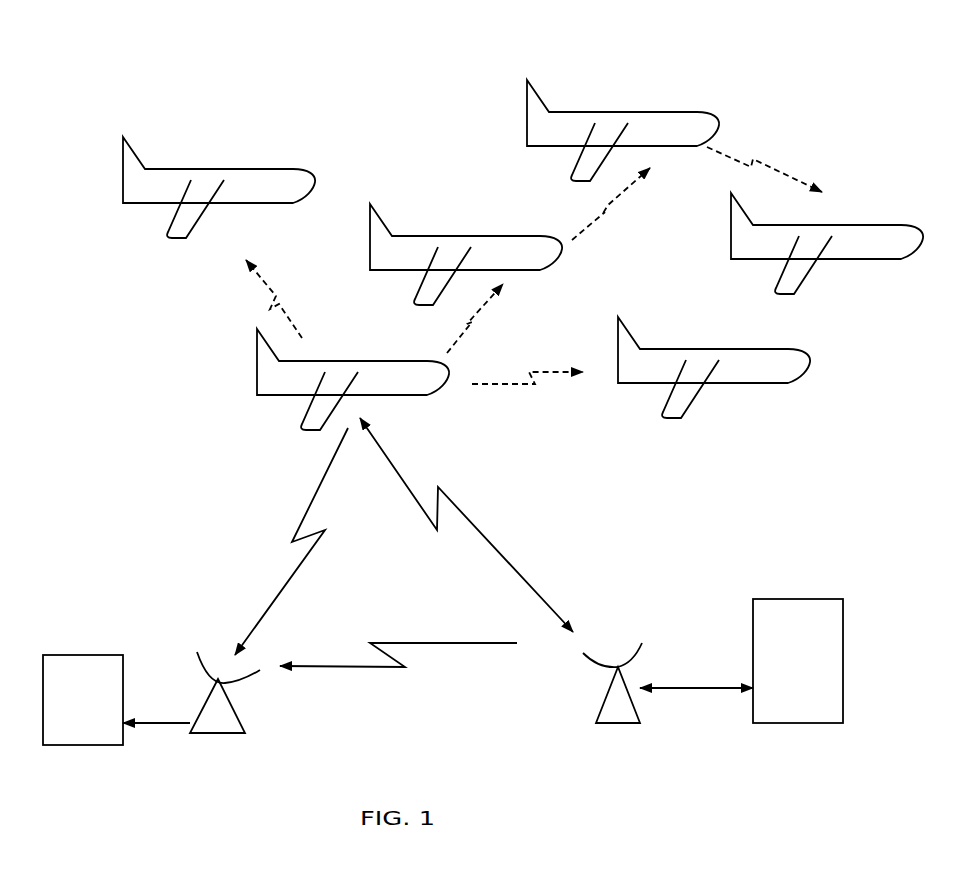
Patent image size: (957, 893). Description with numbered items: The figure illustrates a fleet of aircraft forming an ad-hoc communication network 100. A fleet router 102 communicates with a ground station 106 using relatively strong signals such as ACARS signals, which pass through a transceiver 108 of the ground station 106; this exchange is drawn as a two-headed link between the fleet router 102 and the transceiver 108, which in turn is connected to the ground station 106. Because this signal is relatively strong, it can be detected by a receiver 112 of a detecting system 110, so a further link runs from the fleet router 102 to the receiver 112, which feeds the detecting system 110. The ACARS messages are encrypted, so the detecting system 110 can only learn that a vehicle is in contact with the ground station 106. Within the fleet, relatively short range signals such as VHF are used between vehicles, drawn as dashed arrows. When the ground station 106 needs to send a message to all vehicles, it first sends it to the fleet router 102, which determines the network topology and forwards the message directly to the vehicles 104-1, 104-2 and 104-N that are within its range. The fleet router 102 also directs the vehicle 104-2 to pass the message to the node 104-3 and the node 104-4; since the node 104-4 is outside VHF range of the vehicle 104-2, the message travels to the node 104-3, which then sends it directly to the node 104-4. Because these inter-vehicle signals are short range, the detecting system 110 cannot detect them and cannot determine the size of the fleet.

The ad-hoc communication network 100 is at (292, 102).
The fleet router 102 is at (403, 383).
The vehicle 104-1 is at (247, 192).
The vehicle 104-2 is at (493, 250).
The node 104-3 is at (652, 125).
The node 104-4 is at (866, 247).
The vehicle 104-N is at (753, 372).
The ground station 106 is at (798, 661).
The transceiver 108 is at (618, 698).
The detecting system 110 is at (83, 700).
The receiver 112 is at (223, 712).